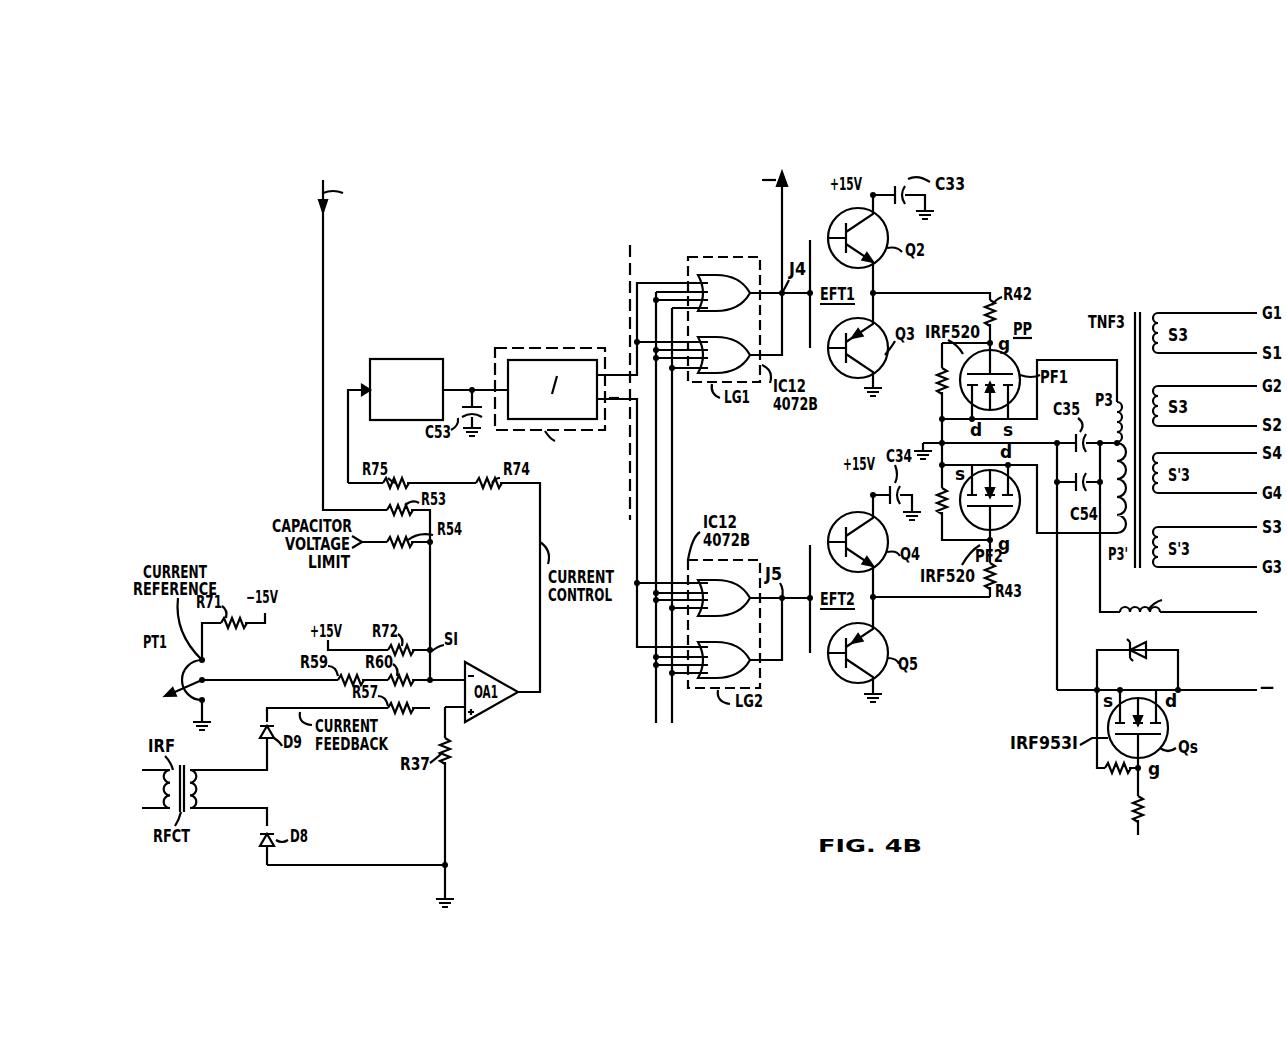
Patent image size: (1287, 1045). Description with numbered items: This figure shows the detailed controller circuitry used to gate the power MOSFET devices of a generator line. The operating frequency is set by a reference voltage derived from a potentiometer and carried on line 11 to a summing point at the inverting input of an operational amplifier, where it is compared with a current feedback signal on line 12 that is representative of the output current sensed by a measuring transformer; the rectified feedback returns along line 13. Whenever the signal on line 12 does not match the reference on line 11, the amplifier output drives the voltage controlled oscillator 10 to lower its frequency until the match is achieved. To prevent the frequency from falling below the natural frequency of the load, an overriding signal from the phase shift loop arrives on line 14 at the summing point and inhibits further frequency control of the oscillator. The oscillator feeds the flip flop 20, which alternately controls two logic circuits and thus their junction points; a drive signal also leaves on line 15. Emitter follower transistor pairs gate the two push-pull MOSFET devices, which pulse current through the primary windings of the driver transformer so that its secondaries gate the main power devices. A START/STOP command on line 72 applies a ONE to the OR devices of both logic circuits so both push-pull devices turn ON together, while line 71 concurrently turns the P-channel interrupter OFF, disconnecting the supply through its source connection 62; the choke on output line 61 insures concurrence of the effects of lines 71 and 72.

The voltage controlled oscillator VCO 10 is at (394, 359).
The reference voltage line 11 is at (239, 680).
The current feedback signal line 12 is at (291, 708).
The rectified feedback return line 13 is at (372, 863).
The phase shift overriding signal line 14 is at (323, 269).
The drive signal line to FIG. 4A 15 is at (782, 203).
The flip-flop IC11 20 is at (537, 348).
The choke CHK positive output line 61 is at (1100, 612).
The interrupt switch source line 62 is at (1074, 693).
The gating line for interrupter 71 is at (1138, 832).
The START/STOP command line 72 is at (652, 723).